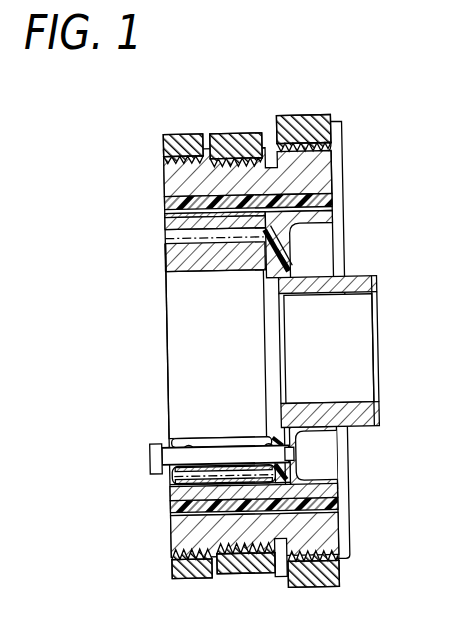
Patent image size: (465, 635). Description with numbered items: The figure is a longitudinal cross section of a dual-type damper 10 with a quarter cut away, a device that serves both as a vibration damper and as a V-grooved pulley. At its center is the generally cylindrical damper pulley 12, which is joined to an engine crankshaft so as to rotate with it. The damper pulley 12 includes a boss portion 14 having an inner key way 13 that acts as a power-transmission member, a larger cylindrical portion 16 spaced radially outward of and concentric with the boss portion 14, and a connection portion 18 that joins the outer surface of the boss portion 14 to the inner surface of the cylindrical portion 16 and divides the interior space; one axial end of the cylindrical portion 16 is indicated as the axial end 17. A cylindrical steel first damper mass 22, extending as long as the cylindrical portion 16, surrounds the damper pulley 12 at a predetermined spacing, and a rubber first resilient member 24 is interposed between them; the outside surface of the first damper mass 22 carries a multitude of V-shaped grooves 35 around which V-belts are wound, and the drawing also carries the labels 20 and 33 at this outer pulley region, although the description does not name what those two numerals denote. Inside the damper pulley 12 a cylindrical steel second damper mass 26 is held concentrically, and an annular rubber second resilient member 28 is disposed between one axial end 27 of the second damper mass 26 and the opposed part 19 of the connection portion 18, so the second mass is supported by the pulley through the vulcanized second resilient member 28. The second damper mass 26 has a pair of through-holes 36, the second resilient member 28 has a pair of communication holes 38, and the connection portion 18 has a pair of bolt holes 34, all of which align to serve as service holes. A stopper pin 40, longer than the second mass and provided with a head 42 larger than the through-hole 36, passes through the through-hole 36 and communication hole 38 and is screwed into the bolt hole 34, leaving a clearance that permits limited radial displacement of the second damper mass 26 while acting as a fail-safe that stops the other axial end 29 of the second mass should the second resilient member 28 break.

The dual-type damper 10 is at (309, 80).
The damper pulley 12 is at (384, 339).
The key way 13 is at (335, 297).
The boss portion 14 is at (365, 417).
The cylindrical portion 16 is at (167, 224).
The axial end of the cylindrical portion 17 is at (170, 488).
The connection portion 18 is at (292, 238).
The part of the connection portion 19 is at (338, 215).
The groove 20 is at (168, 214).
The first damper mass 22 is at (328, 168).
The first resilient member 24 is at (322, 201).
The second damper mass 26 is at (167, 265).
The axial end of the second damper mass 27 is at (267, 278).
The second resilient member 28 is at (288, 258).
The axial end of the second damper mass 29 is at (167, 255).
The backing plate 33 is at (203, 133).
The bolt hole 34 is at (291, 452).
The V-shaped grooves 35 is at (185, 133).
The through-hole 36 is at (180, 445).
The communication hole 38 is at (256, 446).
The stopper pin 40 is at (217, 434).
The head 42 is at (155, 462).